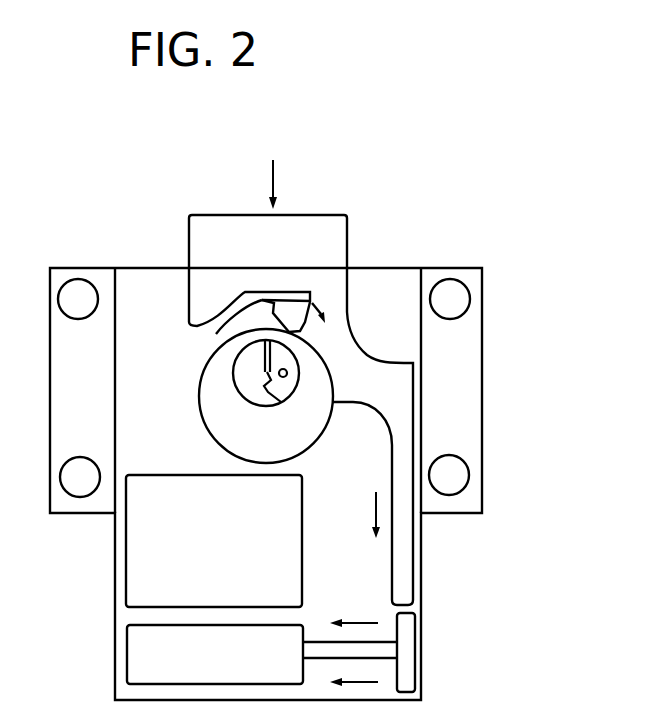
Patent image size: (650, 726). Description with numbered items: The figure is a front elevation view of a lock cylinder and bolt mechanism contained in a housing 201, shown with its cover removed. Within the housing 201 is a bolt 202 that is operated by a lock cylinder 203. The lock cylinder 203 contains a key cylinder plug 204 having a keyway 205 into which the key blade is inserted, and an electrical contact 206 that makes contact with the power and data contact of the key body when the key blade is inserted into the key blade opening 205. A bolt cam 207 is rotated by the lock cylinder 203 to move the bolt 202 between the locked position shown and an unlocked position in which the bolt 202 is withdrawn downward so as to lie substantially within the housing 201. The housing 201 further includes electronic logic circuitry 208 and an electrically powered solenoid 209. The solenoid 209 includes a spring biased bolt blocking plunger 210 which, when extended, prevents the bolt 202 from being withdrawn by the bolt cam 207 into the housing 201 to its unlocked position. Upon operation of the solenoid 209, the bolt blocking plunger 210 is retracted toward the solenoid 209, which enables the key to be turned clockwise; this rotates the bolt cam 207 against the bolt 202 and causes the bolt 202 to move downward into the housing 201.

The housing 201 is at (435, 267).
The bolt 202 is at (362, 360).
The lock cylinder 203 is at (212, 409).
The key cylinder plug 204 is at (247, 396).
The keyway 205 is at (281, 402).
The electrical contact 206 is at (288, 372).
The bolt cam 207 is at (220, 333).
The electronic logic circuitry 208 is at (126, 571).
The solenoid 209 is at (127, 656).
The bolt blocking plunger 210 is at (410, 666).